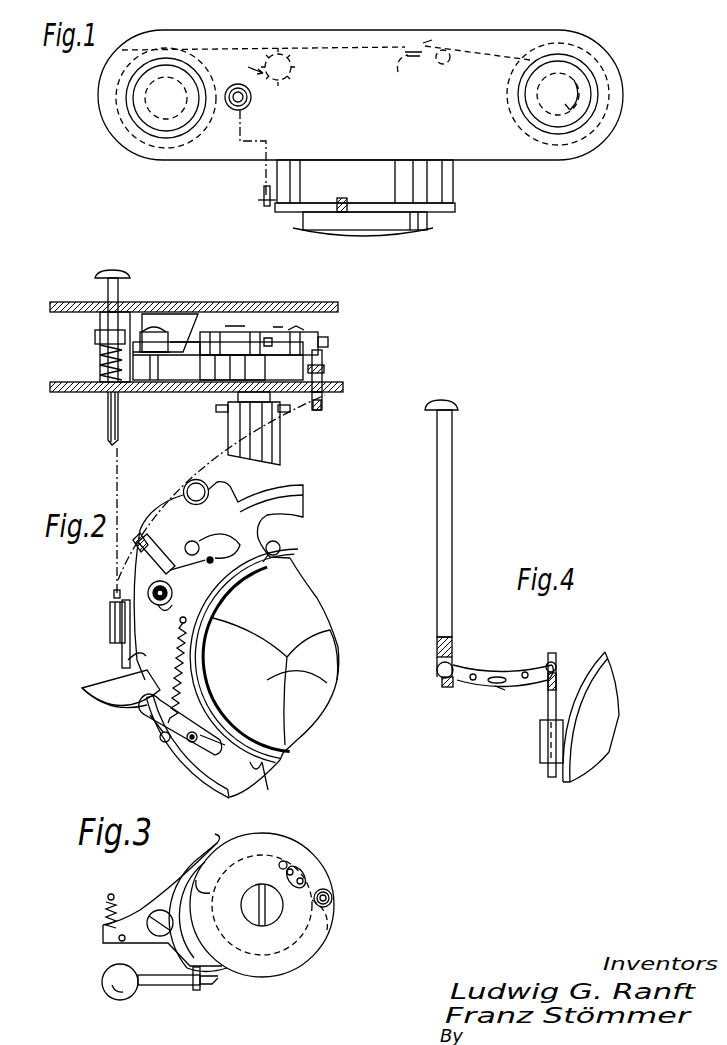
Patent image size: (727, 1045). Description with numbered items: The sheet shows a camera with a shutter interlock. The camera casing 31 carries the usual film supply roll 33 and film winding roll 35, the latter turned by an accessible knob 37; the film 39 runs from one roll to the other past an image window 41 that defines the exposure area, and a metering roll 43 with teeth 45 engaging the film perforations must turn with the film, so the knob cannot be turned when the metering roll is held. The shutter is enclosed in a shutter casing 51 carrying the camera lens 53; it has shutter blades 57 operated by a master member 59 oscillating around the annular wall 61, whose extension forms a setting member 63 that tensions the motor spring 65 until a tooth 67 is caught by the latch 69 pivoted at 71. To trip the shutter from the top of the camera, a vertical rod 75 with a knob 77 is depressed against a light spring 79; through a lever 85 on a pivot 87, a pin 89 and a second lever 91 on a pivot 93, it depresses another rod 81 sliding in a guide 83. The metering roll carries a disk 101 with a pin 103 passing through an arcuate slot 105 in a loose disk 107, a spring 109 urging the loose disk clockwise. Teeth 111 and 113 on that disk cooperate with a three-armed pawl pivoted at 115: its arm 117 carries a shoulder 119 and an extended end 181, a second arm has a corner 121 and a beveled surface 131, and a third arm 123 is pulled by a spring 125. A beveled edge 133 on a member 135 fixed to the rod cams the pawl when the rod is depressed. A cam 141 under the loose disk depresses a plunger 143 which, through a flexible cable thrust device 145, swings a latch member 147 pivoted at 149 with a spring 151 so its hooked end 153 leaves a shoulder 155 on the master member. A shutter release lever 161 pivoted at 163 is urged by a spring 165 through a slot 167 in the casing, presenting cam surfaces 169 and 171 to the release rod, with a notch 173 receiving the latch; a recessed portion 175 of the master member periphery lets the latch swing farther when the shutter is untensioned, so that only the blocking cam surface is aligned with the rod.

In FIG. 1, the camera casing 31 is at (500, 161).
In FIG. 2, the camera casing 31 is at (295, 303).
In FIG. 1, the film supply roll 33 is at (178, 150).
In FIG. 1, the film winding roll 35 is at (528, 58).
In FIG. 1, the knob 37 is at (541, 117).
In FIG. 1, the film 39 is at (465, 56).
In FIG. 1, the image window 41 is at (414, 68).
In FIG. 1, the metering roll 43 is at (283, 83).
In FIG. 2, the metering roll 43 is at (238, 438).
In FIG. 1, the teeth 45 is at (245, 68).
In FIG. 2, the teeth 45 is at (216, 409).
In FIG. 1, the shutter casing 51 is at (448, 180).
In FIG. 2, the shutter casing 51 is at (300, 491).
In FIG. 4, the shutter casing 51 is at (565, 780).
In FIG. 1, the camera lens 53 is at (370, 229).
In FIG. 2, the shutter blades 57 is at (310, 670).
In FIG. 2, the master member 59 is at (269, 571).
In FIG. 2, the annular wall 61 is at (205, 698).
In FIG. 1, the setting member 63 is at (341, 199).
In FIG. 2, the setting member 63 is at (188, 497).
In FIG. 2, the motor spring 65 is at (184, 670).
In FIG. 2, the tooth 67 is at (270, 786).
In FIG. 2, the latch 69 is at (214, 752).
In FIG. 2, the latch pivot 71 is at (192, 743).
In FIG. 2, the rod 75 is at (108, 425).
In FIG. 4, the rod 75 is at (445, 545).
In FIG. 1, the knob 77 is at (239, 110).
In FIG. 2, the knob 77 is at (114, 272).
In FIG. 3, the knob 77 is at (121, 1000).
In FIG. 4, the knob 77 is at (440, 398).
In FIG. 2, the spring 79 is at (100, 368).
In FIG. 1, the rod 81 is at (267, 206).
In FIG. 2, the rod 81 is at (112, 596).
In FIG. 4, the rod 81 is at (554, 661).
In FIG. 4, the guide 83 is at (540, 753).
In FIG. 4, the lever 85 is at (475, 665).
In FIG. 4, the pivot 87 is at (473, 686).
In FIG. 2, the pin 89 is at (110, 612).
In FIG. 4, the pin 89 is at (498, 690).
In FIG. 4, the second lever 91 is at (517, 667).
In FIG. 4, the pivot 93 is at (526, 684).
In FIG. 2, the disk 101 is at (212, 376).
In FIG. 3, the disk 101 is at (254, 858).
In FIG. 2, the pin 103 is at (306, 341).
In FIG. 3, the pin 103 is at (292, 877).
In FIG. 3, the arcuate slot 105 is at (305, 879).
In FIG. 2, the disk 107 is at (337, 340).
In FIG. 3, the disk 107 is at (300, 971).
In FIG. 2, the spring 109 is at (281, 326).
In FIG. 3, the spring 109 is at (279, 854).
In FIG. 3, the tooth 111 is at (219, 892).
In FIG. 3, the tooth 113 is at (228, 967).
In FIG. 2, the pawl pivot 115 is at (153, 332).
In FIG. 3, the pawl pivot 115 is at (154, 912).
In FIG. 3, the arm 117 is at (186, 868).
In FIG. 3, the shoulder 119 is at (166, 882).
In FIG. 2, the corner 121 is at (214, 348).
In FIG. 3, the corner 121 is at (220, 980).
In FIG. 2, the third arm 123 is at (96, 338).
In FIG. 3, the third arm 123 is at (118, 941).
In FIG. 3, the spring 125 is at (106, 918).
In FIG. 2, the beveled surface 131 is at (218, 361).
In FIG. 3, the beveled surface 131 is at (198, 990).
In FIG. 2, the beveled edge 133 is at (190, 333).
In FIG. 2, the member 135 is at (180, 318).
In FIG. 3, the member 135 is at (176, 985).
In FIG. 2, the cam 141 is at (320, 350).
In FIG. 3, the cam 141 is at (330, 931).
In FIG. 2, the plunger 143 is at (325, 371).
In FIG. 3, the plunger 143 is at (332, 900).
In FIG. 2, the flexible cable thrust device 145 is at (318, 406).
In FIG. 2, the latch member 147 is at (213, 563).
In FIG. 2, the latch member pivot 149 is at (200, 546).
In FIG. 2, the spring 151 is at (156, 550).
In FIG. 2, the hooked end 153 is at (261, 543).
In FIG. 2, the shoulder 155 is at (255, 585).
In FIG. 2, the shutter release lever 161 is at (122, 638).
In FIG. 2, the release lever pivot 163 is at (175, 593).
In FIG. 2, the spring 165 is at (156, 619).
In FIG. 2, the slot 167 is at (155, 750).
In FIG. 2, the cam surface 169 is at (130, 705).
In FIG. 2, the cam surface 171 is at (108, 677).
In FIG. 2, the notch 173 is at (150, 717).
In FIG. 2, the recessed portion 175 is at (226, 734).
In FIG. 3, the extended end 181 is at (217, 846).